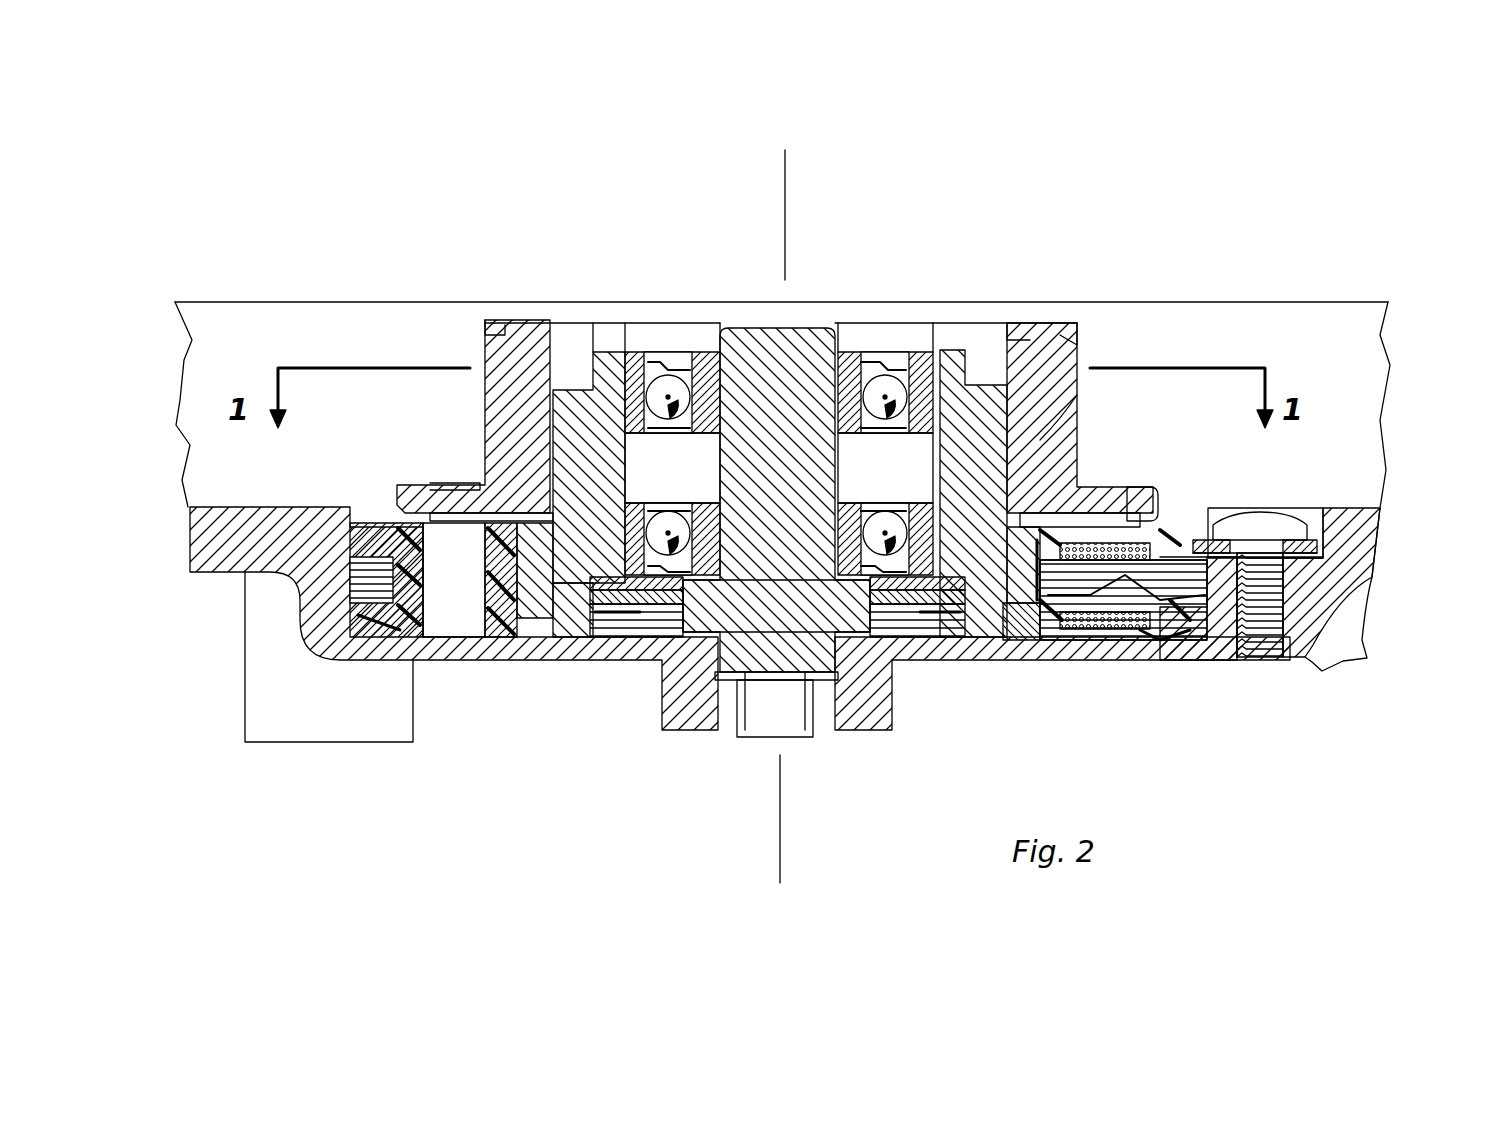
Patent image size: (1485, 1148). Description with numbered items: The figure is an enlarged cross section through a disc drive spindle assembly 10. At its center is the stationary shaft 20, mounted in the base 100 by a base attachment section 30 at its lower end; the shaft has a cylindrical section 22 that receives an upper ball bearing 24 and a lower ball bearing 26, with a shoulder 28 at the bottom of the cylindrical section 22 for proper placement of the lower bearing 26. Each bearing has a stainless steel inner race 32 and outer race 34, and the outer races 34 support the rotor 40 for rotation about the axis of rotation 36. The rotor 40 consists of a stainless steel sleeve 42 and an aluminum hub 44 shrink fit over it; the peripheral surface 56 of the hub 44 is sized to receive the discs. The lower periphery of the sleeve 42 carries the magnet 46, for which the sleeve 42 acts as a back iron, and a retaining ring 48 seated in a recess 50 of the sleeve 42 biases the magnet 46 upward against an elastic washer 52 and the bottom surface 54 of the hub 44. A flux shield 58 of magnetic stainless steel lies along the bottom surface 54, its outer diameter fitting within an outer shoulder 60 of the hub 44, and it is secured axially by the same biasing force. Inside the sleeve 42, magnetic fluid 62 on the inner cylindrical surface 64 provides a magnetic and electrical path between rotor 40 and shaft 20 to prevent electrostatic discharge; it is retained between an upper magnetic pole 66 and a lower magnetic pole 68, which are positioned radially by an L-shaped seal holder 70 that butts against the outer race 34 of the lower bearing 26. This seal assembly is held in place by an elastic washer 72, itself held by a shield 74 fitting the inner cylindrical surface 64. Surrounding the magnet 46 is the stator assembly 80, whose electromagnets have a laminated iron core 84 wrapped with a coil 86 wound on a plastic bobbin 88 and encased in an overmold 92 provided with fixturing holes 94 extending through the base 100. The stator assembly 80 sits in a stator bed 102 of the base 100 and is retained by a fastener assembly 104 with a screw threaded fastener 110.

The spindle assembly 10 is at (675, 205).
The stationary shaft 20 is at (775, 355).
The cylindrical section 22 is at (747, 376).
The upper ball bearing 24 is at (648, 360).
The lower ball bearing 26 is at (648, 498).
The shoulder 28 is at (848, 585).
The base attachment section 30 is at (800, 730).
The inner race 32 is at (840, 533).
The outer race 34 is at (655, 340).
The axis of rotation 36 is at (785, 162).
The rotor 40 is at (1095, 330).
The sleeve 42 is at (955, 360).
The hub 44 is at (1020, 345).
The magnet 46 is at (1027, 607).
The retaining ring 48 is at (1010, 623).
The recess 50 is at (992, 620).
The elastic washer 52 is at (1020, 500).
The bottom surface 54 is at (1050, 517).
The peripheral surface 56 is at (1080, 395).
The flux shield 58 is at (1147, 513).
The outer shoulder 60 is at (1167, 535).
The magnetic fluid 62 is at (372, 540).
The inner cylindrical surface 64 is at (583, 575).
The upper magnetic pole 66 is at (683, 573).
The lower magnetic pole 68 is at (683, 615).
The seal holder 70 is at (560, 575).
The elastic washer 72 is at (618, 620).
The shield 74 is at (665, 610).
The stator assembly 80 is at (1152, 650).
The core 84 is at (1225, 603).
The coil 86 is at (1107, 627).
The plastic bobbin 88 is at (412, 642).
The overmold 92 is at (1165, 535).
The fixturing holes 94 is at (447, 615).
The base 100 is at (1385, 533).
The stator bed 102 is at (1200, 620).
The fastener assembly 104 is at (1310, 505).
The fastener 110 is at (1285, 530).